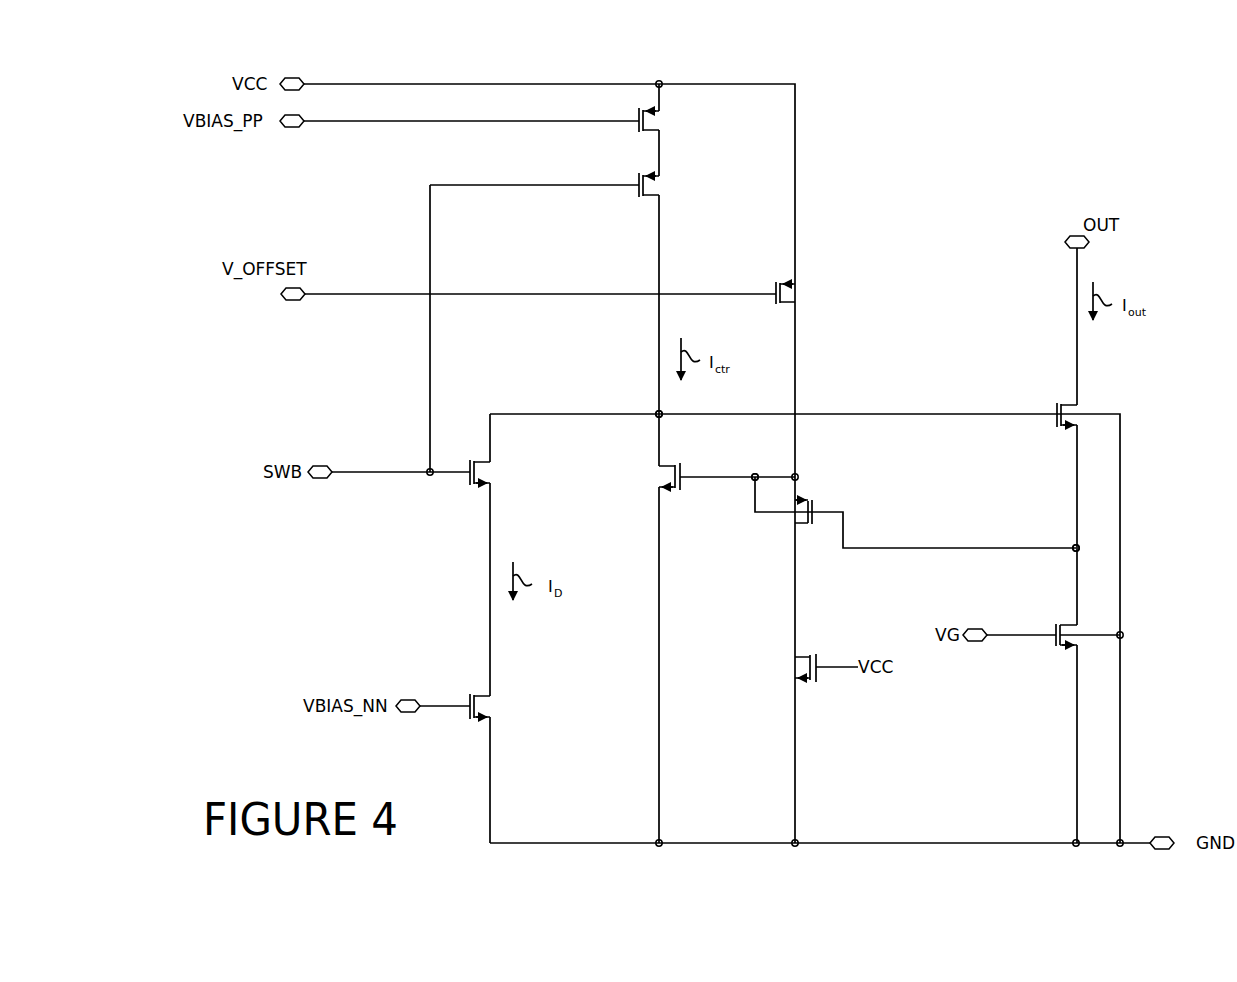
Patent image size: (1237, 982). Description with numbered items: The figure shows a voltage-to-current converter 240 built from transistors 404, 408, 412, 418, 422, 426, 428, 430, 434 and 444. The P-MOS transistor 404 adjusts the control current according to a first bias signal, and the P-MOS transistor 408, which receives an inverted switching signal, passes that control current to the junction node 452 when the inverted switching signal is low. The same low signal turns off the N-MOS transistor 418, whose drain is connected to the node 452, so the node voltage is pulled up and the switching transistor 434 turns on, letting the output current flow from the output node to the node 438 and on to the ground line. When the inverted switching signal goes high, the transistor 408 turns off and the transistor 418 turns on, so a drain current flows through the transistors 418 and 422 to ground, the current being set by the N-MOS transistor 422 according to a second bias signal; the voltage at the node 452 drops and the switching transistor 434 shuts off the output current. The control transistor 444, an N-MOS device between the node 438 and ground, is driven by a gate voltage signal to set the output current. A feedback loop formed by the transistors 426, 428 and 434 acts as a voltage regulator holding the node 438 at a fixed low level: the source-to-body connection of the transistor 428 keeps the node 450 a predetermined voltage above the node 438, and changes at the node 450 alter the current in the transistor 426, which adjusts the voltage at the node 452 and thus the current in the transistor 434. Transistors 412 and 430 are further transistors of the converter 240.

The VI converter 240 is at (942, 86).
The transistor 404 is at (650, 110).
The transistor 408 is at (650, 176).
The transistor 412 is at (797, 304).
The transistor 418 is at (487, 484).
The transistor 422 is at (487, 718).
The transistor 426 is at (662, 466).
The transistor 428 is at (808, 500).
The transistor 430 is at (812, 680).
The switching transistor 434 is at (1057, 405).
The node 438 is at (1073, 547).
The control transistor 444 is at (1058, 645).
The node 450 is at (755, 477).
The junction node 452 is at (659, 413).